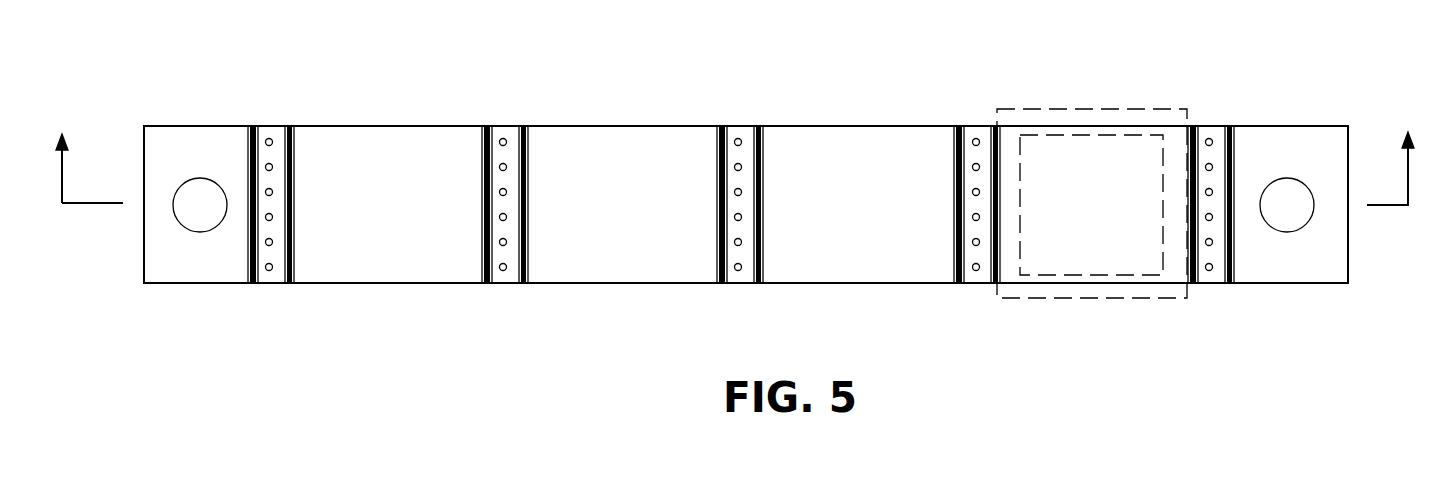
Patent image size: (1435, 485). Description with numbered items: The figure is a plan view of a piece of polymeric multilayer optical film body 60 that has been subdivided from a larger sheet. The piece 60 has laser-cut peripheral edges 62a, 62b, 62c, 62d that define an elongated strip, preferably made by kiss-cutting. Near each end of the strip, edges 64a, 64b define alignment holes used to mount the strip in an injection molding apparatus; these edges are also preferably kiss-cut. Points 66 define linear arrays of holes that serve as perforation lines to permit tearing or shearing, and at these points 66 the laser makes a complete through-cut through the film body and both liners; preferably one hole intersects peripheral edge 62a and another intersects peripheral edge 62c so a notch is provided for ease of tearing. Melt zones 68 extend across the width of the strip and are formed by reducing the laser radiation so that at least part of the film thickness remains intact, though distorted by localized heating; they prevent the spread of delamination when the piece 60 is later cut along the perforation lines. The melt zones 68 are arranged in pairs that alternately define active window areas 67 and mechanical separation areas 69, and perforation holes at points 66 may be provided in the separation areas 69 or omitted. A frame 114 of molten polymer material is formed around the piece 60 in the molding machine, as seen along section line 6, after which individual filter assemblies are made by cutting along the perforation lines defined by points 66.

The multilayer optical film body piece 60 is at (188, 104).
The section line 6 is at (736, 150).
The peripheral edge 62a is at (548, 124).
The peripheral edge 62b is at (1350, 248).
The peripheral edge 62c is at (850, 285).
The peripheral edge 62d is at (142, 248).
The alignment hole edge 64a is at (180, 188).
The alignment hole edge 64b is at (1291, 178).
The perforation points 66 is at (272, 245).
The active window area 67 is at (378, 258).
The melt zone 68 is at (257, 128).
The mechanical separation area 69 is at (265, 280).
The frame 114 is at (1050, 107).